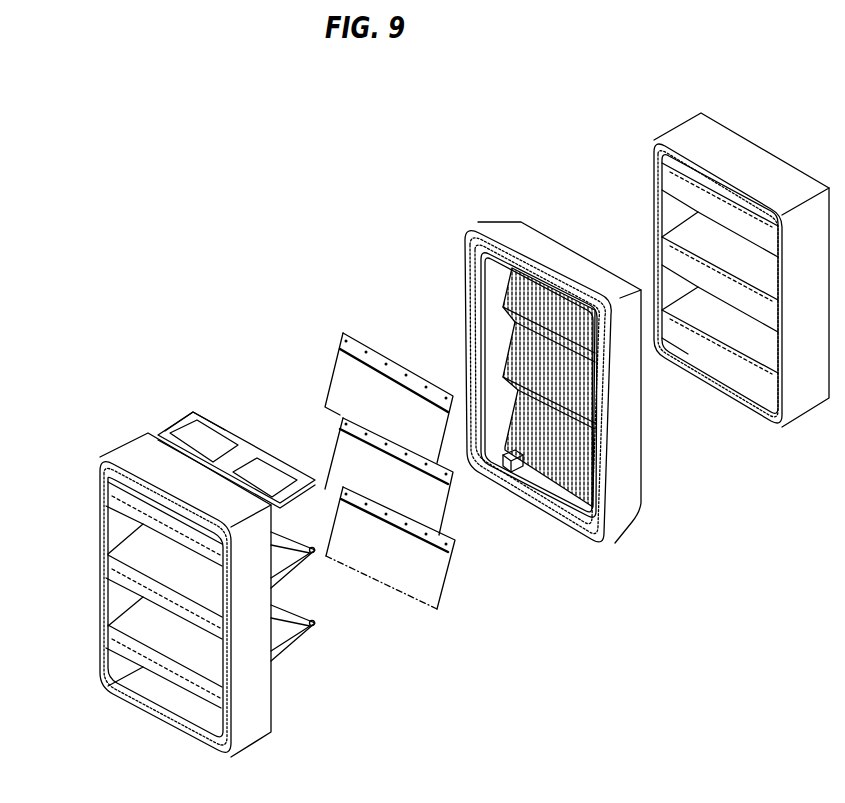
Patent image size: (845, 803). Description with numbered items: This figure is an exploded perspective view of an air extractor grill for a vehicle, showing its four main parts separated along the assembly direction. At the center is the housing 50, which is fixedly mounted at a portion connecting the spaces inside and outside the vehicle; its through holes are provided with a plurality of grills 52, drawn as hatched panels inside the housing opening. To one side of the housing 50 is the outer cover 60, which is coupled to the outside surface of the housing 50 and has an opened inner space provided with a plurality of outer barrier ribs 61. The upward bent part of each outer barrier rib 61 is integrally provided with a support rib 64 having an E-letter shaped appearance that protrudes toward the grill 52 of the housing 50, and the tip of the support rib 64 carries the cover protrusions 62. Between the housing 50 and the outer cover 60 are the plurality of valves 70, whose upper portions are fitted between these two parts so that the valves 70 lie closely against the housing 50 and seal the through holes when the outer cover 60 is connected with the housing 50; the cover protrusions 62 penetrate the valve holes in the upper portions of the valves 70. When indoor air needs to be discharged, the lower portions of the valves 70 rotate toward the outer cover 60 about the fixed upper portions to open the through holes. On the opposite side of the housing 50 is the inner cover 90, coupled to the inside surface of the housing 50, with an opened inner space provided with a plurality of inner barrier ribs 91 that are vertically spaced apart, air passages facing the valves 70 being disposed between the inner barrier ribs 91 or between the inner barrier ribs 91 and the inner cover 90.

The housing 50 is at (641, 433).
The grill 52 is at (558, 285).
The outer cover 60 is at (133, 444).
The outer barrier rib 61 is at (105, 520).
The cover protrusion 62 is at (307, 460).
The support rib 64 is at (177, 422).
The valve 70 is at (342, 368).
The inner cover 90 is at (757, 160).
The inner barrier rib 91 is at (677, 180).